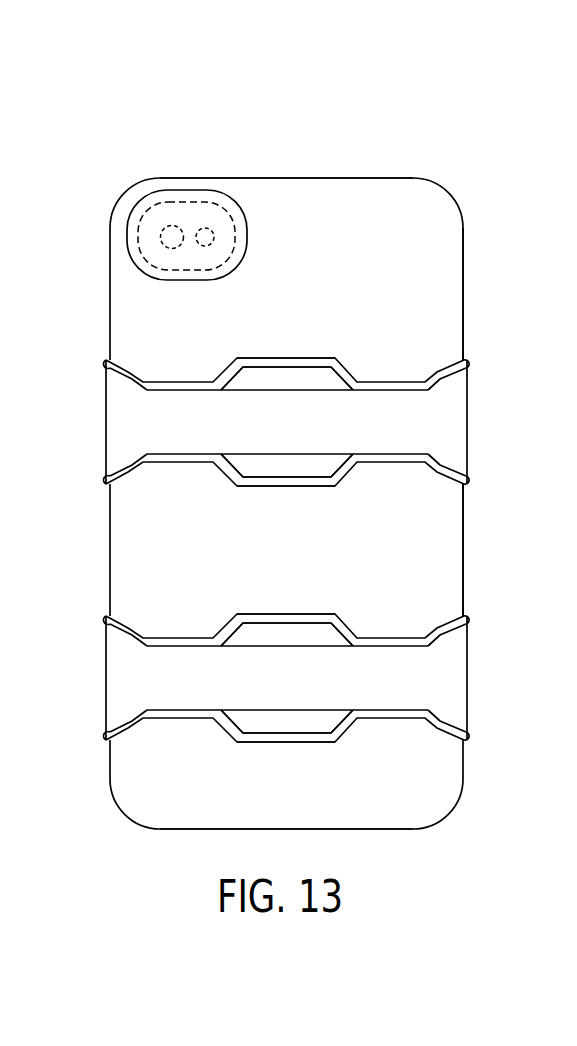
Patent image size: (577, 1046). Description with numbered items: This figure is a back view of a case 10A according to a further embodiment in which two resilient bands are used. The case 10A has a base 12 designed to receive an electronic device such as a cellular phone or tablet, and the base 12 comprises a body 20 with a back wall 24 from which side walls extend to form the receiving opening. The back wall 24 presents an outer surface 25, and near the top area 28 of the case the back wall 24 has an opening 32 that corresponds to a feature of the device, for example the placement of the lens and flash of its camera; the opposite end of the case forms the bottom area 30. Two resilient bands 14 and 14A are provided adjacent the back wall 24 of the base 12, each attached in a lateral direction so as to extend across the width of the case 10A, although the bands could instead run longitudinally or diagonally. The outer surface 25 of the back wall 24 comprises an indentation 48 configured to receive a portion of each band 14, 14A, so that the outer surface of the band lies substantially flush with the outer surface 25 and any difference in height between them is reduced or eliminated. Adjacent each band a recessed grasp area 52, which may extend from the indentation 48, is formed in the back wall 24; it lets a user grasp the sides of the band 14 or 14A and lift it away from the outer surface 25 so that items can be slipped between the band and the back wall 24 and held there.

The case 10A is at (118, 169).
The base 12 is at (449, 189).
The body 20 is at (463, 237).
The top area 28 is at (330, 178).
The bottom area 30 is at (389, 829).
The outer surface 25 is at (316, 260).
The opening 32 is at (186, 191).
The resilient band 14A is at (370, 397).
The resilient band 14 is at (364, 652).
The indentation 48 is at (306, 364).
The recessed grasp area 52 is at (250, 380).
The back wall 24 is at (443, 527).